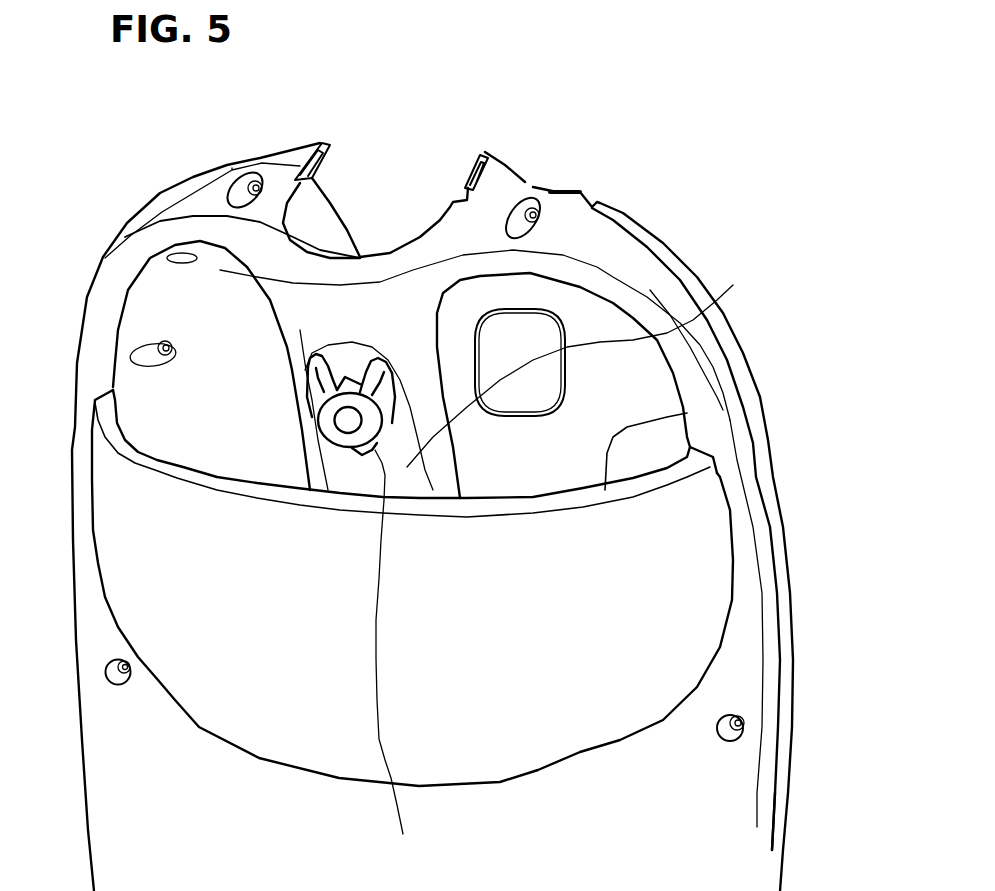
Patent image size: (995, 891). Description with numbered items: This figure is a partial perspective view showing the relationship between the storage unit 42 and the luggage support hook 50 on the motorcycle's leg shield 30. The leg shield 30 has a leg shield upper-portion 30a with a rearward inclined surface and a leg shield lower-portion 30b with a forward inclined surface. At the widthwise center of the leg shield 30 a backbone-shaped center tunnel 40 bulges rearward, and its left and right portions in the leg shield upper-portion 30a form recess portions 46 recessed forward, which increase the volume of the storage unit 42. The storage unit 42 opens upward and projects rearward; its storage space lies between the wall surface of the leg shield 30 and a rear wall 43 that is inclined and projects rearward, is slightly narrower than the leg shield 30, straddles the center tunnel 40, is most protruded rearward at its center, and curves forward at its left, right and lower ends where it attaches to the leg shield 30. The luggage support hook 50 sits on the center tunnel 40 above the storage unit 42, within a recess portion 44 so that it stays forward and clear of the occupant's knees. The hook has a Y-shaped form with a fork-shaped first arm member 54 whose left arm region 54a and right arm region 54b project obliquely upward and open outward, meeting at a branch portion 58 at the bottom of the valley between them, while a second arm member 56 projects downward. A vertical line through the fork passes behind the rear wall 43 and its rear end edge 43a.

The leg shield 30 is at (748, 307).
The leg shield upper-portion 30a is at (111, 254).
The leg shield lower-portion 30b is at (710, 810).
The center tunnel 40 is at (289, 282).
The storage unit 42 is at (690, 633).
The rear wall 43 is at (705, 510).
The rear end edge 43a is at (723, 410).
The recess portion 44 is at (595, 358).
The recess portions 46 is at (180, 280).
The luggage support hook 50 is at (285, 428).
The first arm member 54 is at (447, 341).
The left arm region 54a is at (317, 358).
The right arm region 54b is at (382, 363).
The second arm member 56 is at (401, 662).
The branch portion 58 is at (345, 377).